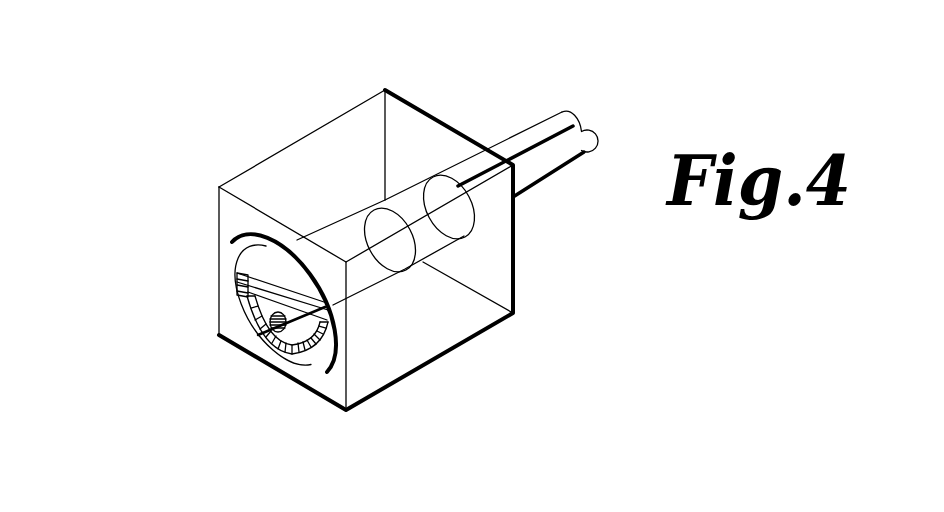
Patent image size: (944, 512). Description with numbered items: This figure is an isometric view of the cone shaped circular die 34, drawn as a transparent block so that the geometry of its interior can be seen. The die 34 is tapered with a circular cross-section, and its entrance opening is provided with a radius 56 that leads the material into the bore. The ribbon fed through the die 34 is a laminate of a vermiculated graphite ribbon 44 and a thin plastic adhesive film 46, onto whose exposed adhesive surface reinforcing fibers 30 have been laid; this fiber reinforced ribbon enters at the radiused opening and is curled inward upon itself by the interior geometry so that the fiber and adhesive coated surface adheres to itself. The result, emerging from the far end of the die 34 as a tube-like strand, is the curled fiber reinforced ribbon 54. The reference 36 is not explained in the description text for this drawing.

The reinforcing fibers 30 is at (257, 337).
The cone shaped circular die 34 is at (318, 170).
The coupling body 36 is at (456, 117).
The vermiculated graphite ribbon 44 is at (260, 360).
The plastic adhesive film 46 is at (255, 298).
The curled fiber reinforced ribbon 54 is at (533, 175).
The radius 56 is at (323, 363).